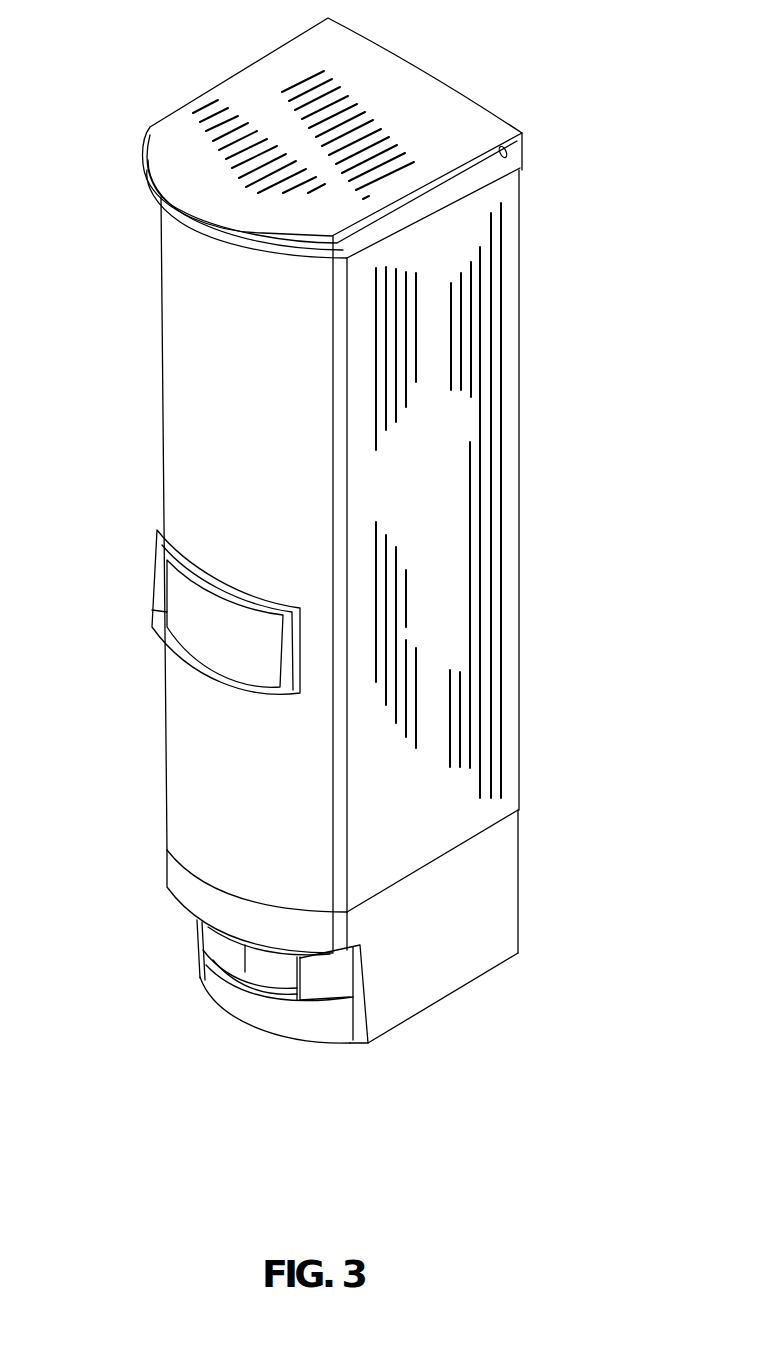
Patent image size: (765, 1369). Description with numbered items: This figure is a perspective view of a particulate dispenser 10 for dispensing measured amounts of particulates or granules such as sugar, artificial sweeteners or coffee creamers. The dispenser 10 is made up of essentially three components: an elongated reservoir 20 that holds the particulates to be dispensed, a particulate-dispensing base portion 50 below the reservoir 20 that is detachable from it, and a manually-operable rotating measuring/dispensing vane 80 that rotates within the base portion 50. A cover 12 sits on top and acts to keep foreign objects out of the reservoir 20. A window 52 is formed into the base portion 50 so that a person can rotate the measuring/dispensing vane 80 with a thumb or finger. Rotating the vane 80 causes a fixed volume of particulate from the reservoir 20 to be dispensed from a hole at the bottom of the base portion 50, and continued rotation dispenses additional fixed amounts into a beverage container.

The particulate dispenser 10 is at (51, 61).
The cover 12 is at (483, 122).
The elongated reservoir 20 is at (507, 418).
The particulate-dispensing base portion 50 is at (470, 907).
The window 52 is at (177, 998).
The measuring/dispensing vane 80 is at (333, 980).